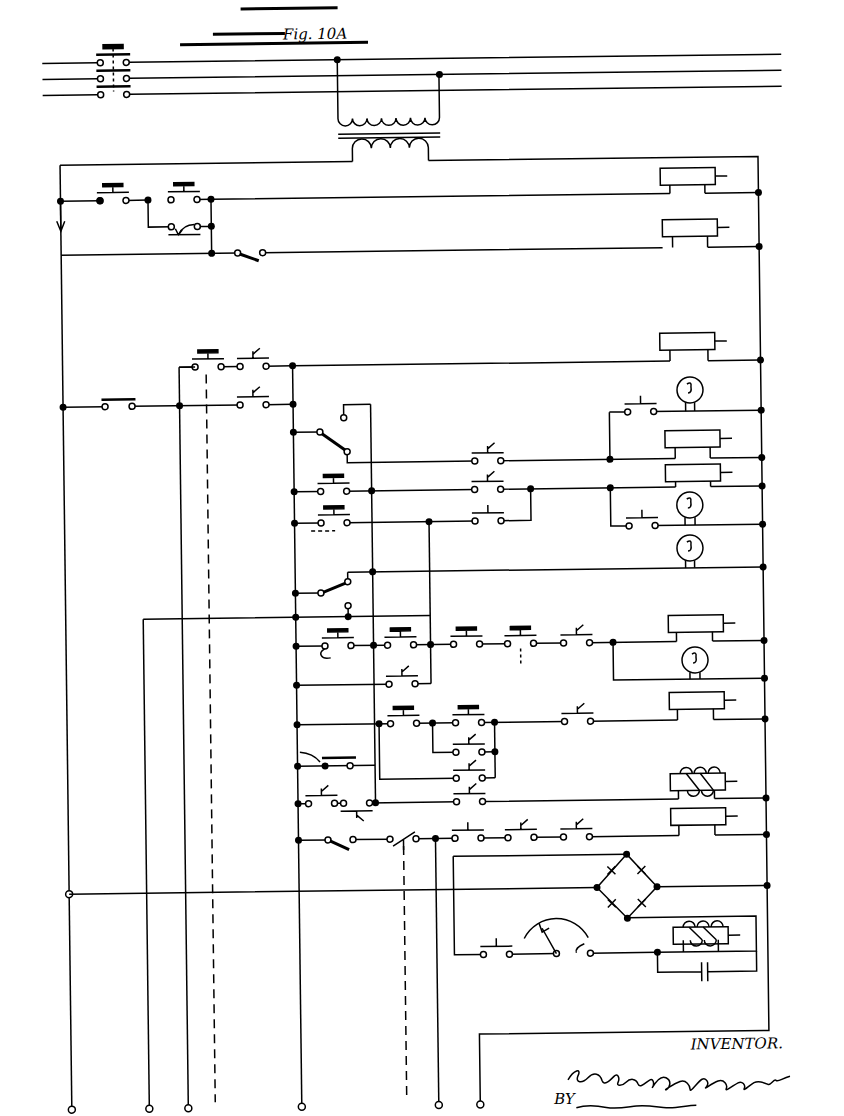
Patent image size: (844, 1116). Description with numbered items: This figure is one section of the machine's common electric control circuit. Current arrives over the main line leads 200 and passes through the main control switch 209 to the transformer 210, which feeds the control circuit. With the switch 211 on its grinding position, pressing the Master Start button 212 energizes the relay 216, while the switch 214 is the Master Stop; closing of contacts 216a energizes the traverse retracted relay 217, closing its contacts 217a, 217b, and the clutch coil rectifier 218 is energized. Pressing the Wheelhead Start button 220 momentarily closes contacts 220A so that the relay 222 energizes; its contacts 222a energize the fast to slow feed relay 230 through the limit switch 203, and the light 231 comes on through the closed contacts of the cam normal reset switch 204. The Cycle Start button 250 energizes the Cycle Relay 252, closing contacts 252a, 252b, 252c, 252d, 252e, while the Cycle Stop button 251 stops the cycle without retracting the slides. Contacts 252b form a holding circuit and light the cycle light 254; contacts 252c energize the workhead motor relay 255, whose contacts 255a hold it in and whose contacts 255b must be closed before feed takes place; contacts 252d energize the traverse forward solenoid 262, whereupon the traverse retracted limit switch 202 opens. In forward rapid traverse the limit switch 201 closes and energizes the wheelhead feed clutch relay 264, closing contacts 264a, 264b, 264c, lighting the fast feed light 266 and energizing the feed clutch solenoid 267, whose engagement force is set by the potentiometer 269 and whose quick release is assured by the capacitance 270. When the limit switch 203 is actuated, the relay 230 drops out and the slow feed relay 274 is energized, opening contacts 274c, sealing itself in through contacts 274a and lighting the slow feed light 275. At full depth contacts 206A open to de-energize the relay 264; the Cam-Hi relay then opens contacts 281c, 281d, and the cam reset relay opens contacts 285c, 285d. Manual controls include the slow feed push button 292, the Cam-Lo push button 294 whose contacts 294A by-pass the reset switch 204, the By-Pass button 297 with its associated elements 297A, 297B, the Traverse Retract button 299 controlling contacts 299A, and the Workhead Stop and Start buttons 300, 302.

The main line leads 200 is at (70, 60).
The main control switch 209 is at (127, 49).
The transformer 210 is at (441, 131).
The switch 211 is at (118, 393).
The Master Start button 212 is at (199, 188).
The Master Stop switch 214 is at (116, 191).
The relay 216 is at (666, 182).
The contacts 216a is at (216, 224).
The traverse retracted relay 217 is at (668, 232).
The contacts 217a is at (268, 357).
The contacts 217b is at (311, 799).
The clutch coil rectifier 218 is at (668, 875).
The limit switch 201 is at (331, 851).
The traverse retracted limit switch 202 is at (251, 263).
The limit switch 203 is at (356, 441).
The cam normal reset switch 204 is at (331, 581).
The contacts 206A is at (395, 841).
The Wheelhead Start button 220 is at (207, 352).
The contacts 220A is at (190, 362).
The relay 222 is at (664, 345).
The contacts 222a is at (272, 398).
The fast to slow feed relay 230 is at (665, 442).
The light 231 is at (704, 552).
The Cycle Start button 250 is at (398, 627).
The Cycle Stop button 251 is at (463, 628).
The Cycle Relay 252 is at (690, 622).
The contacts 252a is at (504, 484).
The contacts 252b is at (415, 670).
The contacts 252c is at (490, 774).
The contacts 252d is at (490, 799).
The contacts 252e is at (455, 847).
The cycle light 254 is at (707, 665).
The workhead motor relay 255 is at (722, 702).
The contacts 255a is at (490, 749).
The contacts 255b is at (529, 832).
The traverse forward solenoid 262 is at (694, 772).
The wheelhead feed clutch relay 264 is at (724, 819).
The contacts 264a is at (628, 405).
The contacts 264b is at (645, 530).
The contacts 264c is at (499, 959).
The fast feed light 266 is at (704, 389).
The wheelhead feed clutch solenoid 267 is at (669, 938).
The potentiometer 269 is at (559, 948).
The capacitance 270 is at (697, 982).
The slow feed relay 274 is at (667, 478).
The contacts 274a is at (488, 526).
The contacts 274c is at (488, 455).
The slow feed light 275 is at (705, 509).
The contacts 281c is at (361, 812).
The contacts 281d is at (587, 834).
The contacts 285c is at (578, 632).
The contacts 285d is at (580, 720).
The slow feed push button 292 is at (331, 476).
The Cam-Lo push button 294 is at (350, 514).
The contacts 294A is at (350, 525).
The By-Pass button 297 is at (313, 641).
The push button linkage 297A is at (318, 655).
The switch 297B is at (311, 761).
The Traverse Retract button 299 is at (519, 628).
The contacts 299A is at (533, 648).
The Workhead Stop button 300 is at (393, 713).
The Workhead Start button 302 is at (479, 706).